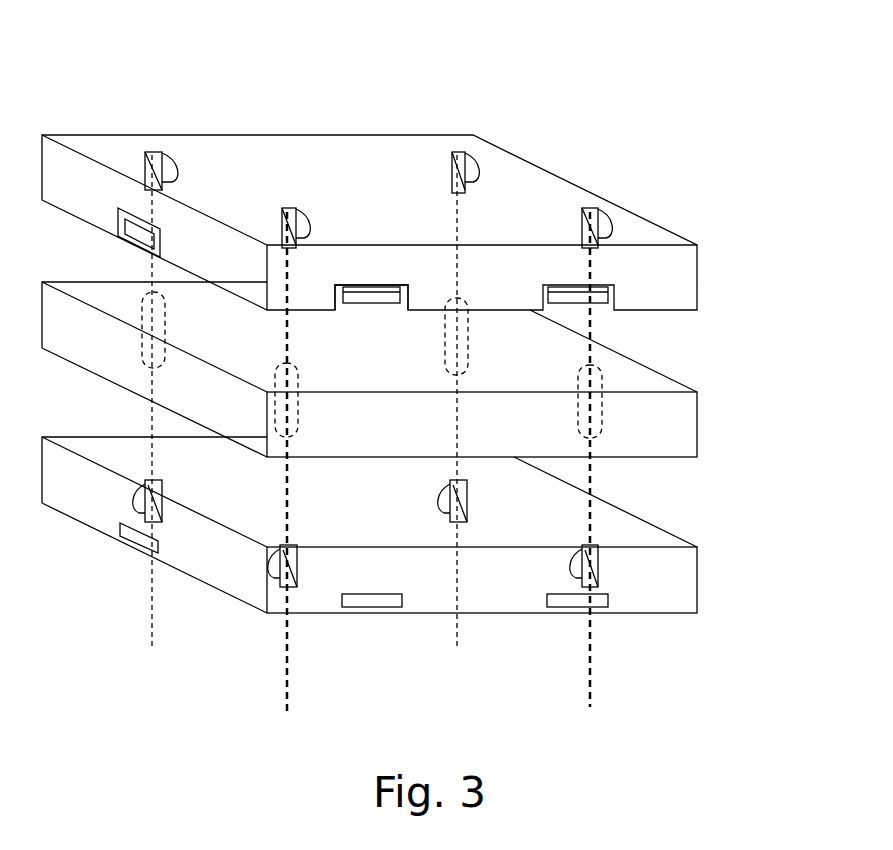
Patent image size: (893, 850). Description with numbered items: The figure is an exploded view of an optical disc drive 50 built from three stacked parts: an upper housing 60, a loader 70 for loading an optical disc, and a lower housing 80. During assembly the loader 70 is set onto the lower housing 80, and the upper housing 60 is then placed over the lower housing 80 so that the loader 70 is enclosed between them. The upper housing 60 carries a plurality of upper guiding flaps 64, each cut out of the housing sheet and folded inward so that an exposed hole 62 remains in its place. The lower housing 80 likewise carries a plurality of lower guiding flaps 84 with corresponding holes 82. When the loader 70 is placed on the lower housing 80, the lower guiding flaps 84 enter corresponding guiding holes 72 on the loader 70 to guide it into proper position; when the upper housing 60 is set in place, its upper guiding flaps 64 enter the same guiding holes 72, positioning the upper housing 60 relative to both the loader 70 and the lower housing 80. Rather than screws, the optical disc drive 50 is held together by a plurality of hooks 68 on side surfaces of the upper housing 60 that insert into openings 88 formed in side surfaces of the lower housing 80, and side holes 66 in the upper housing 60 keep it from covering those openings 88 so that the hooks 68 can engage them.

The optical disc drive 50 is at (699, 106).
The upper housing 60 is at (618, 218).
The exposed hole 62 is at (159, 152).
The upper guiding flap 64 is at (170, 182).
The side hole 66 is at (409, 290).
The hook 68 is at (366, 300).
The loader 70 is at (675, 435).
The guiding hole 72 is at (300, 410).
The lower housing 80 is at (683, 590).
The hole 82 is at (297, 577).
The lower guiding flap 84 is at (298, 549).
The opening 88 is at (365, 603).